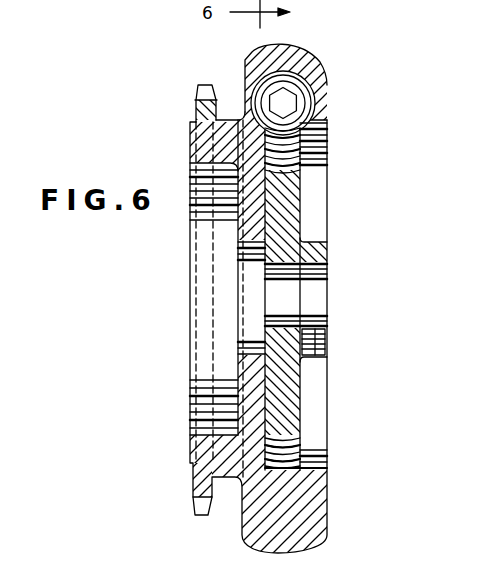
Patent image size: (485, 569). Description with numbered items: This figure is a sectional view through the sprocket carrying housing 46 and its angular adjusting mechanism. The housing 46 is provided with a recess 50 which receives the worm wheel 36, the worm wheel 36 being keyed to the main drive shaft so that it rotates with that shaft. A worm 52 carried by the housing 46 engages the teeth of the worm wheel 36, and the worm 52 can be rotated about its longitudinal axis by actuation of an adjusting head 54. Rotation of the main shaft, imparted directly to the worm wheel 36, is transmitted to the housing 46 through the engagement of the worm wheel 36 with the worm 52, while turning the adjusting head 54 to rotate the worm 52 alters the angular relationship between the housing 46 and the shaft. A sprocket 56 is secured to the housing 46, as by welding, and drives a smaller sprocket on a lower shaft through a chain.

The worm wheel 36 is at (320, 204).
The sprocket carrying housing 46 is at (312, 63).
The recess 50 is at (318, 147).
The worm 52 is at (318, 87).
The adjusting head 54 is at (292, 105).
The sprocket 56 is at (197, 113).